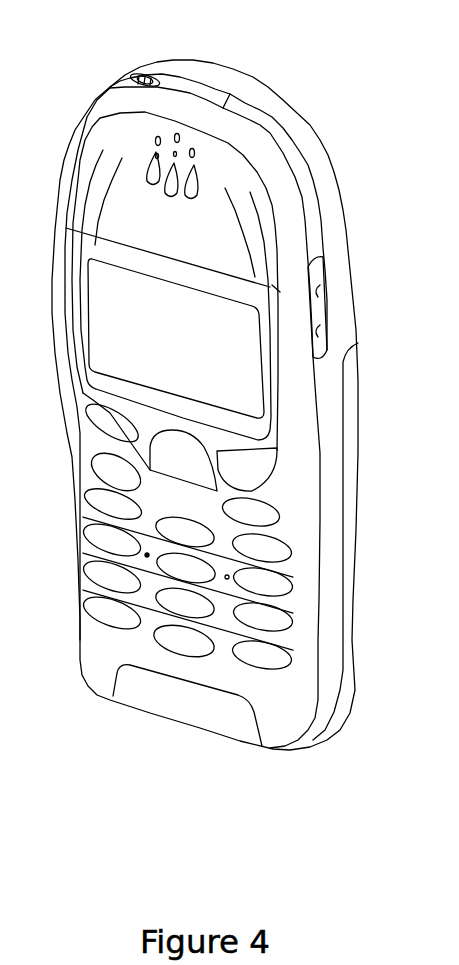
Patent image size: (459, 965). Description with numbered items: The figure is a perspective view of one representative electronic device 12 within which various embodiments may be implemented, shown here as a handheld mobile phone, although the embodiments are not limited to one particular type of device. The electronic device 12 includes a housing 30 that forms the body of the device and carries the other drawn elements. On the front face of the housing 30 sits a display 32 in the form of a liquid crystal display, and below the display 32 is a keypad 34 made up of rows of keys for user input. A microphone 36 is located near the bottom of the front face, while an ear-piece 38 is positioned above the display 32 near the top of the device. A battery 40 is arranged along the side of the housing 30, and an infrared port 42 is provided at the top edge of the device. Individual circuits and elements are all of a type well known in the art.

The electronic device 12 is at (224, 408).
The housing 30 is at (330, 197).
The display 32 is at (245, 375).
The keypad 34 is at (265, 657).
The microphone 36 is at (133, 693).
The ear-piece 38 is at (165, 160).
The battery 40 is at (348, 645).
The infrared port 42 is at (193, 87).